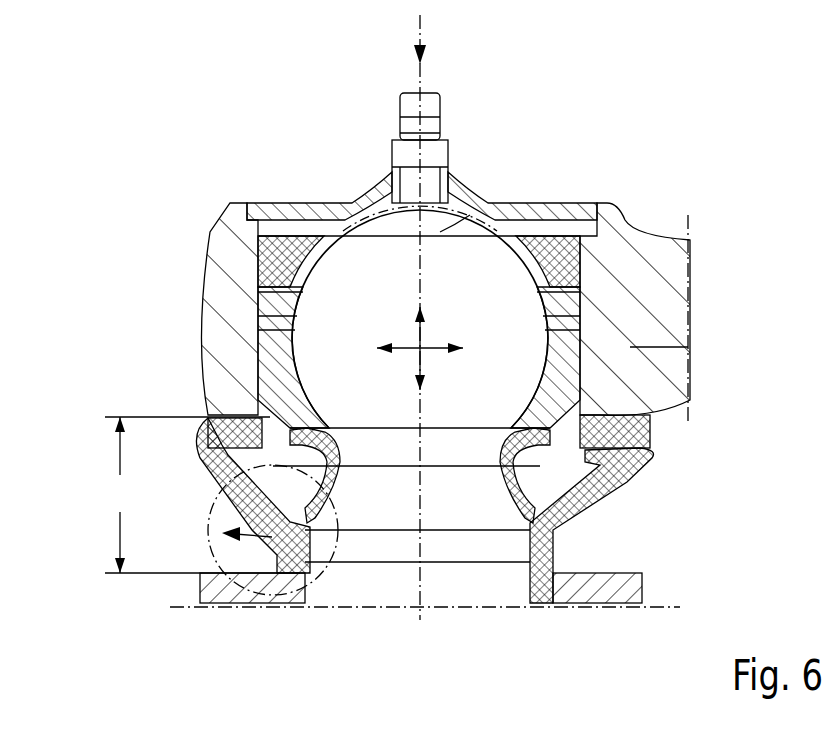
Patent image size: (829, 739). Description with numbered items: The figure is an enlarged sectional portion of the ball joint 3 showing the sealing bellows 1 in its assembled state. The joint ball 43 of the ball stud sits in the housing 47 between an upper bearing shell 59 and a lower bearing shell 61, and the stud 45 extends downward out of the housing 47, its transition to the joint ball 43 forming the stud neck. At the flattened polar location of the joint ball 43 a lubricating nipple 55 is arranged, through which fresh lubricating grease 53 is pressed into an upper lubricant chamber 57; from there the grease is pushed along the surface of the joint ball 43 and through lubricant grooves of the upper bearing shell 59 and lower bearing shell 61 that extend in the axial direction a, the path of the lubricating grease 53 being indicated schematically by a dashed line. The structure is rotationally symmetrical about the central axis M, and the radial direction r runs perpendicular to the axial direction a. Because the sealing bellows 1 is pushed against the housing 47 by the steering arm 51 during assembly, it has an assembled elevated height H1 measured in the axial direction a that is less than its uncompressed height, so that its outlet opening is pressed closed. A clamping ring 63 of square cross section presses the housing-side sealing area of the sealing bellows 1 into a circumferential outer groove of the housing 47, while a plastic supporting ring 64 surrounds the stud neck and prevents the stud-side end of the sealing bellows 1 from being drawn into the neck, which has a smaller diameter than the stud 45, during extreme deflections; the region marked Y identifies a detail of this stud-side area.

The sealing bellows 1 is at (592, 541).
The ball joint 3 is at (266, 126).
The joint ball 43 is at (487, 240).
The stud 45 is at (406, 535).
The housing 47 is at (215, 330).
The steering arm 51 is at (618, 593).
The lubricating grease 53 is at (364, 208).
The lubricating nipple 55 is at (445, 155).
The upper lubricant chamber 57 is at (445, 212).
The upper bearing shell 59 is at (258, 270).
The lower bearing shell 61 is at (258, 373).
The clamping ring 63 is at (640, 445).
The supporting ring 64 is at (600, 512).
The central axis M is at (483, 187).
The axial direction a is at (427, 323).
The radial direction r is at (427, 347).
The detail region Y is at (210, 517).
The assembled elevated height H1 is at (123, 495).